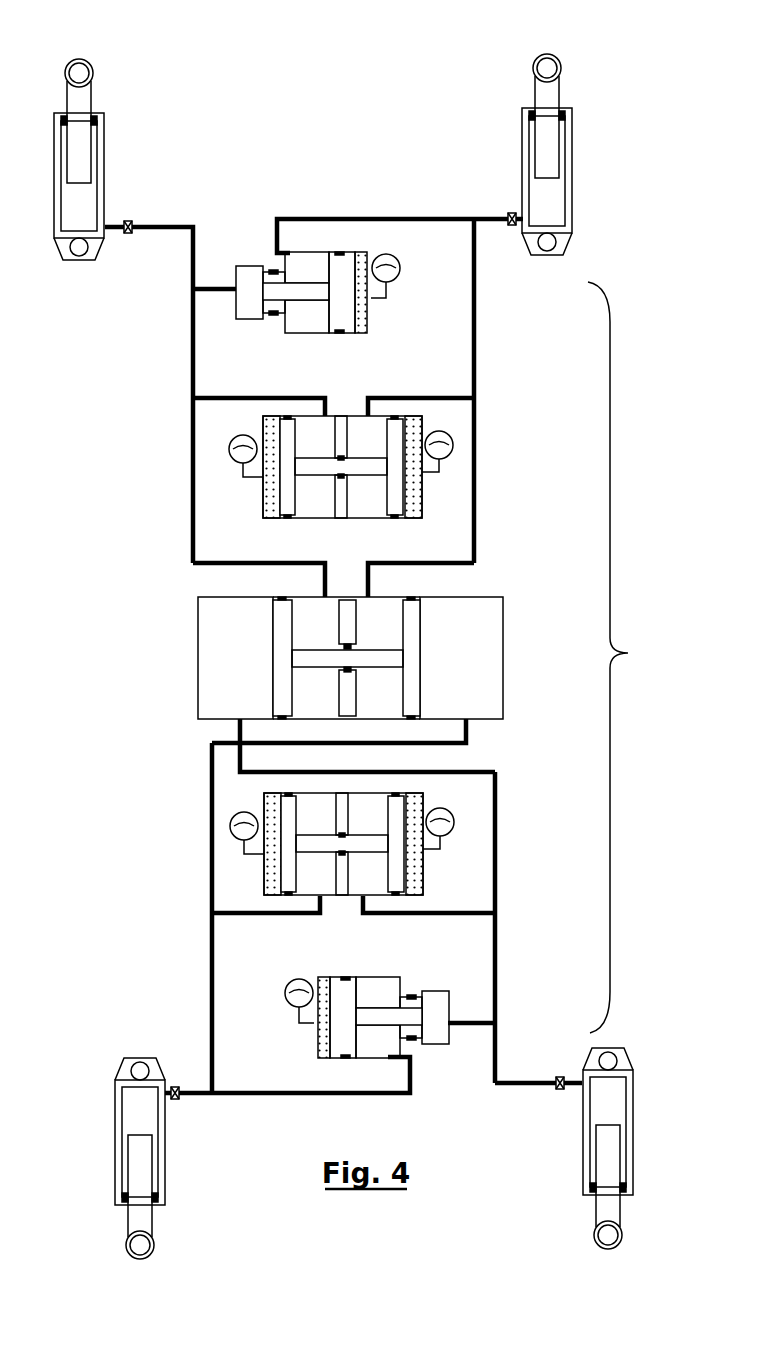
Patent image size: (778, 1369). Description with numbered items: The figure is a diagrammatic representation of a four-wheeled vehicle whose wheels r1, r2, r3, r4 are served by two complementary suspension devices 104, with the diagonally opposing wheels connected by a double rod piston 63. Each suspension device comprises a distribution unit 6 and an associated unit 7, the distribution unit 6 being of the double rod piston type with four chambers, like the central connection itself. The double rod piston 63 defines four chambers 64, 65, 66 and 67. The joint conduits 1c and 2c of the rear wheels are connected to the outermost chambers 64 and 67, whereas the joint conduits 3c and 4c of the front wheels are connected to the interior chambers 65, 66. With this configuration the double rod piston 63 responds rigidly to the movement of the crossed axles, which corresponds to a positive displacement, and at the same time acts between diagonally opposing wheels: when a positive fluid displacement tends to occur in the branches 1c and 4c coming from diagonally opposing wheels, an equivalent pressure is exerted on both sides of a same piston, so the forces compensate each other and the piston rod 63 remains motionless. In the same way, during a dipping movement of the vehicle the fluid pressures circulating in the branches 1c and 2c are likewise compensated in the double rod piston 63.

The wheel r1 is at (140, 1175).
The wheel r2 is at (608, 1168).
The wheel r3 is at (79, 139).
The wheel r4 is at (547, 135).
The single-acting hydraulic accumulator unit 7 is at (482, 294).
The distribution unit 6 is at (493, 457).
The double rod piston 63 is at (311, 649).
The outermost chamber 64 is at (213, 685).
The interior chamber 65 is at (313, 625).
The interior chamber 66 is at (375, 632).
The outermost chamber 67 is at (465, 675).
The joint conduit 1c is at (212, 783).
The joint conduit 2c is at (495, 793).
The joint conduit 3c is at (193, 531).
The joint conduit 4c is at (474, 530).
The complementary suspension devices 104 is at (640, 657).